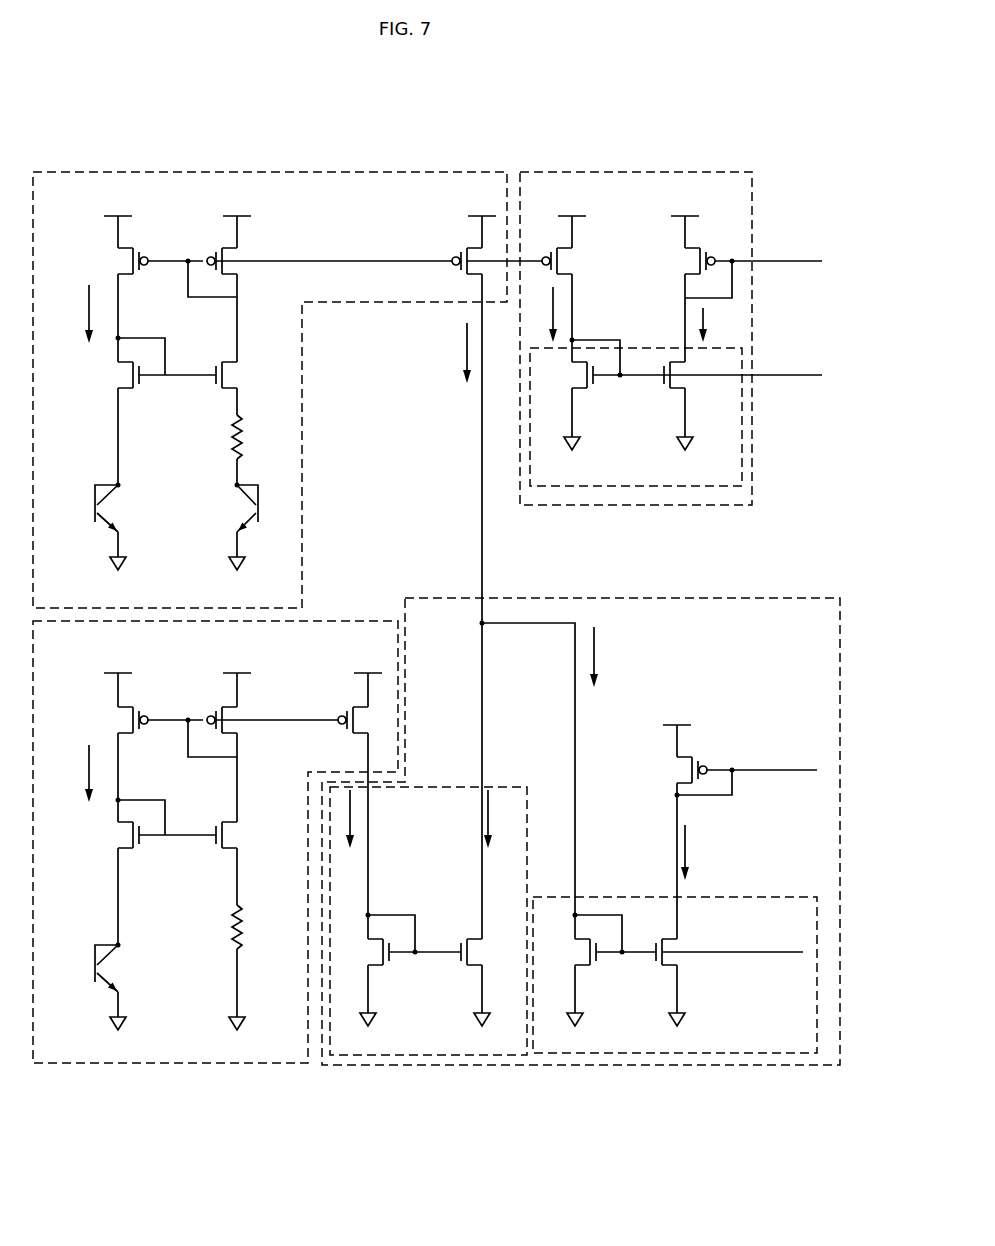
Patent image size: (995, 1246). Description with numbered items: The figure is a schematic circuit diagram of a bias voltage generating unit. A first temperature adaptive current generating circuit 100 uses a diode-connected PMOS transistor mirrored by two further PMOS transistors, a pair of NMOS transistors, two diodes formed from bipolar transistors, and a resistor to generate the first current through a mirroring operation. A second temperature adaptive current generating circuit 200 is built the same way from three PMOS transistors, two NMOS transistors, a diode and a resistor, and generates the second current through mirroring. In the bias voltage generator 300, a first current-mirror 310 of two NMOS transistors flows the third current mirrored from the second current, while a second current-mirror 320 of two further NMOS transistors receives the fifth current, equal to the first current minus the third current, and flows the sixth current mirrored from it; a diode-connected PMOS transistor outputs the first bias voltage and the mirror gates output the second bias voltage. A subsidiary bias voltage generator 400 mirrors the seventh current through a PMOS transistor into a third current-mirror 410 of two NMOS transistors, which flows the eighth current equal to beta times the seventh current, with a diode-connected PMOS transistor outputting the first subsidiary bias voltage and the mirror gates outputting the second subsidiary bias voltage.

The first temperature adaptive current generating circuit 100 is at (446, 173).
The second temperature adaptive current generating circuit 200 is at (135, 1064).
The bias voltage generator 300 is at (777, 598).
The first current-mirror 310 is at (510, 788).
The second current-mirror 320 is at (598, 898).
The subsidiary bias voltage generator 400 is at (690, 173).
The third current-mirror 410 is at (743, 428).